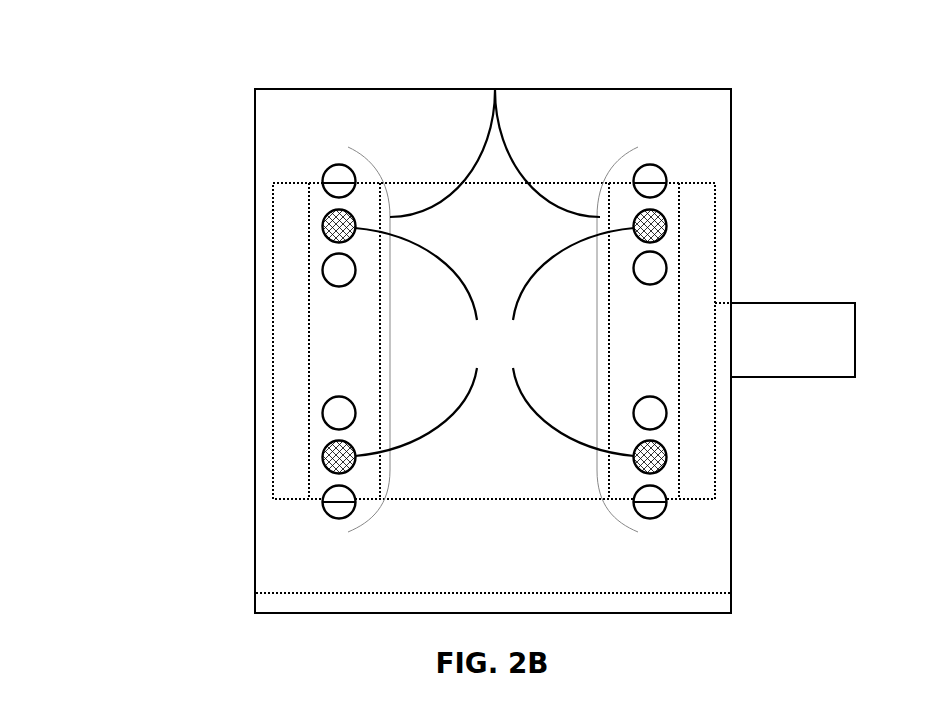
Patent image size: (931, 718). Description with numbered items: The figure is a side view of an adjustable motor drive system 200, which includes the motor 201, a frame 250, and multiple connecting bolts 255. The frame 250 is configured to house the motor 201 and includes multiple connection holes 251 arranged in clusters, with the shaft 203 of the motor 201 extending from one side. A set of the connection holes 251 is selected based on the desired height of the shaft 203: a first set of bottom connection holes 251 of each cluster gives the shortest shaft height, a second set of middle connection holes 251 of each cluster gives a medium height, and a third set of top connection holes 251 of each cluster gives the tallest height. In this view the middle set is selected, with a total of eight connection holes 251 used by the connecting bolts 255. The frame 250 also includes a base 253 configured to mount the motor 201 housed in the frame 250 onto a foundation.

The adjustable motor drive system 200 is at (138, 106).
The motor 201 is at (715, 258).
The shaft 203 is at (790, 378).
The frame 250 is at (748, 570).
The connection holes 251 is at (495, 90).
The base 253 is at (255, 603).
The connecting bolts 255 is at (494, 342).